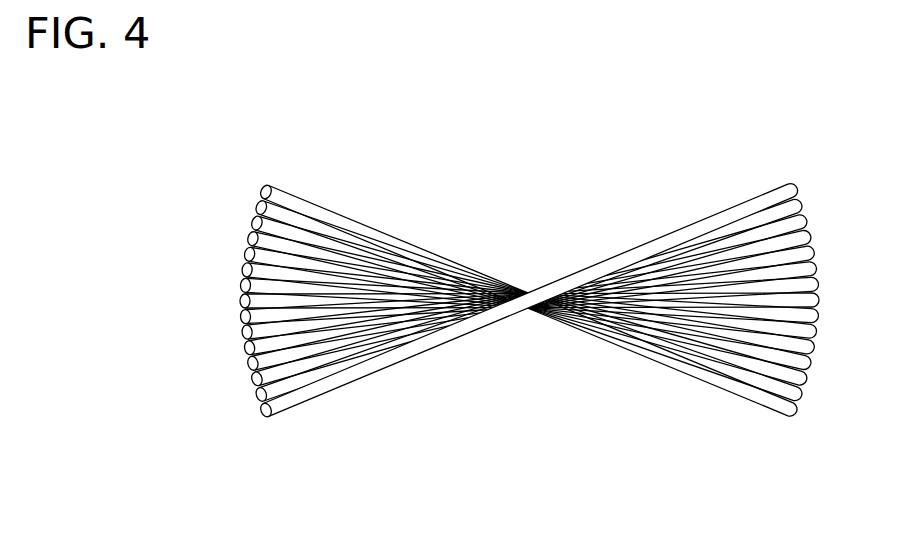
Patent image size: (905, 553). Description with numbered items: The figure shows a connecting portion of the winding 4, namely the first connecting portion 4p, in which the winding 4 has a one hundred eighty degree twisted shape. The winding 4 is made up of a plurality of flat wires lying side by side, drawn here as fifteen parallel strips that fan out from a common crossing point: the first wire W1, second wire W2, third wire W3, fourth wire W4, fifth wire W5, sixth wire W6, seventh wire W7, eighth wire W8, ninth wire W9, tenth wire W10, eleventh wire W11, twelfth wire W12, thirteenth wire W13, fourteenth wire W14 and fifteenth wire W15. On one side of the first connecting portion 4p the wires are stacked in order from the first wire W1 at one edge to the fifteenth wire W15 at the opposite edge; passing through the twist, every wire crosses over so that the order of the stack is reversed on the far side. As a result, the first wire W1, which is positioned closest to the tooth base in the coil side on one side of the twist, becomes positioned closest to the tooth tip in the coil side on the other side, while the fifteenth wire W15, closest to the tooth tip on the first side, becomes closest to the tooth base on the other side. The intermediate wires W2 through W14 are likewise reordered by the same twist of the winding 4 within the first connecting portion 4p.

The winding 4 is at (455, 302).
The first connecting portion 4p is at (488, 188).
The first wire W1 is at (261, 192).
The second wire W2 is at (256, 208).
The third wire W3 is at (252, 223).
The fourth wire W4 is at (248, 239).
The fifth wire W5 is at (245, 254).
The sixth wire W6 is at (242, 270).
The seventh wire W7 is at (240, 285).
The eighth wire W8 is at (240, 301).
The ninth wire W9 is at (240, 317).
The tenth wire W10 is at (242, 332).
The eleventh wire W11 is at (245, 348).
The twelfth wire W12 is at (248, 363).
The thirteenth wire W13 is at (252, 379).
The fourteenth wire W14 is at (256, 394).
The fifteenth wire W15 is at (476, 333).